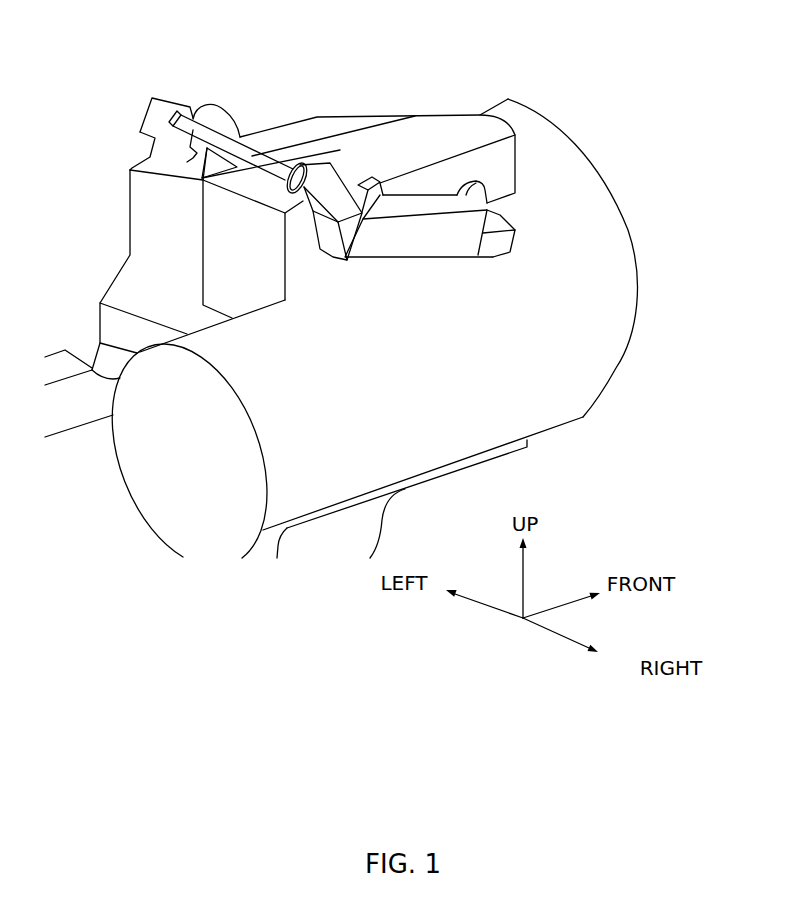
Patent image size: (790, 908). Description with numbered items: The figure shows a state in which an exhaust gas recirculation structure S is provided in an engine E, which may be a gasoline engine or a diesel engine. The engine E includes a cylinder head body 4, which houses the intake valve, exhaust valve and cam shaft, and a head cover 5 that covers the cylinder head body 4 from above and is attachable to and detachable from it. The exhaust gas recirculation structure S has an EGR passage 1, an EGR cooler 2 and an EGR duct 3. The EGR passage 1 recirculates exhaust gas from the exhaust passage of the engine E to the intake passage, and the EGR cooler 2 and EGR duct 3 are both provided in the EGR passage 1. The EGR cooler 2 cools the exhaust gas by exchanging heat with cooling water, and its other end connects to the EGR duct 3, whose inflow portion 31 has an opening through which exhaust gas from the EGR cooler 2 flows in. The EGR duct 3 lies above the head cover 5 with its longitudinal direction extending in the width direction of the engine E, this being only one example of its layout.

The EGR passage 1 is at (340, 175).
The EGR cooler 2 is at (404, 207).
The EGR duct 3 is at (253, 140).
The inflow portion 31 is at (308, 162).
The cylinder head body 4 is at (233, 260).
The head cover 5 is at (452, 130).
The exhaust gas recirculation structure S is at (270, 136).
The engine E is at (550, 146).